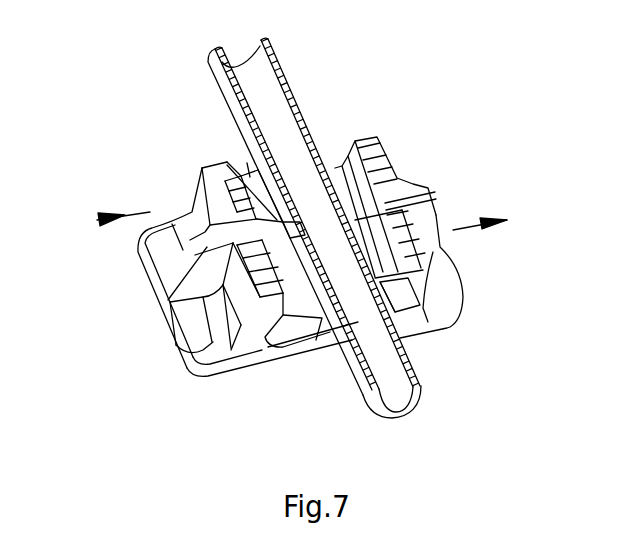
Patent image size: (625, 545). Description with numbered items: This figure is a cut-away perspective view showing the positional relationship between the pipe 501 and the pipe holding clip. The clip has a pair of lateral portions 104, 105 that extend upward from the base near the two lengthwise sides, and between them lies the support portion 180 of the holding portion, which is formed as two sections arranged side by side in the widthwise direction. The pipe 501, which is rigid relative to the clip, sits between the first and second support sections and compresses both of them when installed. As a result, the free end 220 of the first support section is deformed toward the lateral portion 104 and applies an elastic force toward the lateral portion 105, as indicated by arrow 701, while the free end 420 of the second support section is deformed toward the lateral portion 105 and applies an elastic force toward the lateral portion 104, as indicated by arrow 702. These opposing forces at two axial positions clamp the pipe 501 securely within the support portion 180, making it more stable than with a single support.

The lateral portion 104 is at (203, 178).
The lateral portion 105 is at (440, 250).
The support portion 180 is at (250, 160).
The free end 220 is at (282, 352).
The free end 420 is at (323, 167).
The pipe 501 is at (290, 100).
The arrow 701 is at (473, 222).
The arrow 702 is at (110, 214).